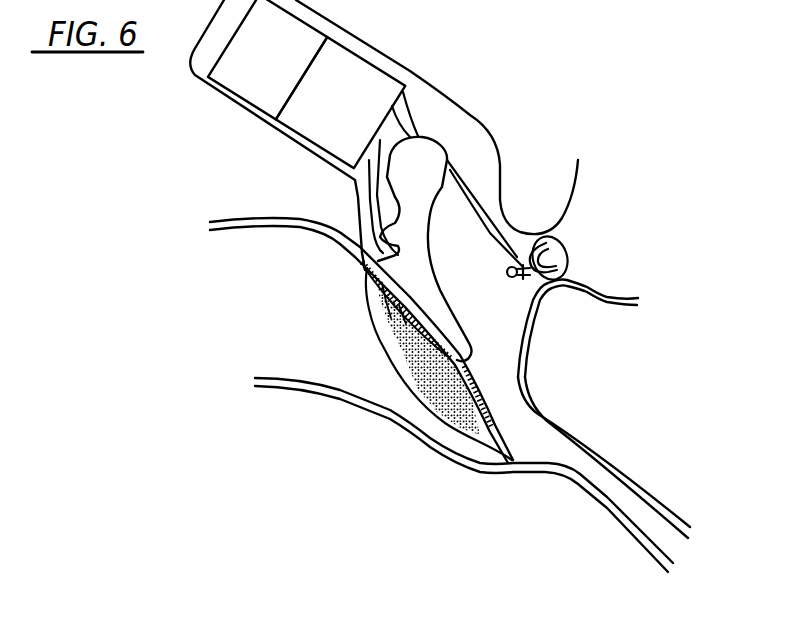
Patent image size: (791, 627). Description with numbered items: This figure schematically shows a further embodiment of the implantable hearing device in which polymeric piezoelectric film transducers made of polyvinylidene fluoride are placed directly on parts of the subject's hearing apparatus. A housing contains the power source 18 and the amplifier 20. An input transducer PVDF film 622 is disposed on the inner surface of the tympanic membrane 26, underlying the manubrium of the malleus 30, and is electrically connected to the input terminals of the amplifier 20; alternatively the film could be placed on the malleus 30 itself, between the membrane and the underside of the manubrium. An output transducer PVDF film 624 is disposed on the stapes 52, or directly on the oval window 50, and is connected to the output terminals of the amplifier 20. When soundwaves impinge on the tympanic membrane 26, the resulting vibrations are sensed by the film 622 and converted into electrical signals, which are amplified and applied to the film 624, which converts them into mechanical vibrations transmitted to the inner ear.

The power source 18 is at (233, 83).
The amplifier 20 is at (308, 133).
The malleus 30 is at (395, 180).
The tympanic membrane 26 is at (376, 302).
The PVDF film 622 is at (396, 342).
The oval window 50 is at (567, 273).
The stapes 52 is at (529, 279).
The PVDF film 624 is at (524, 278).